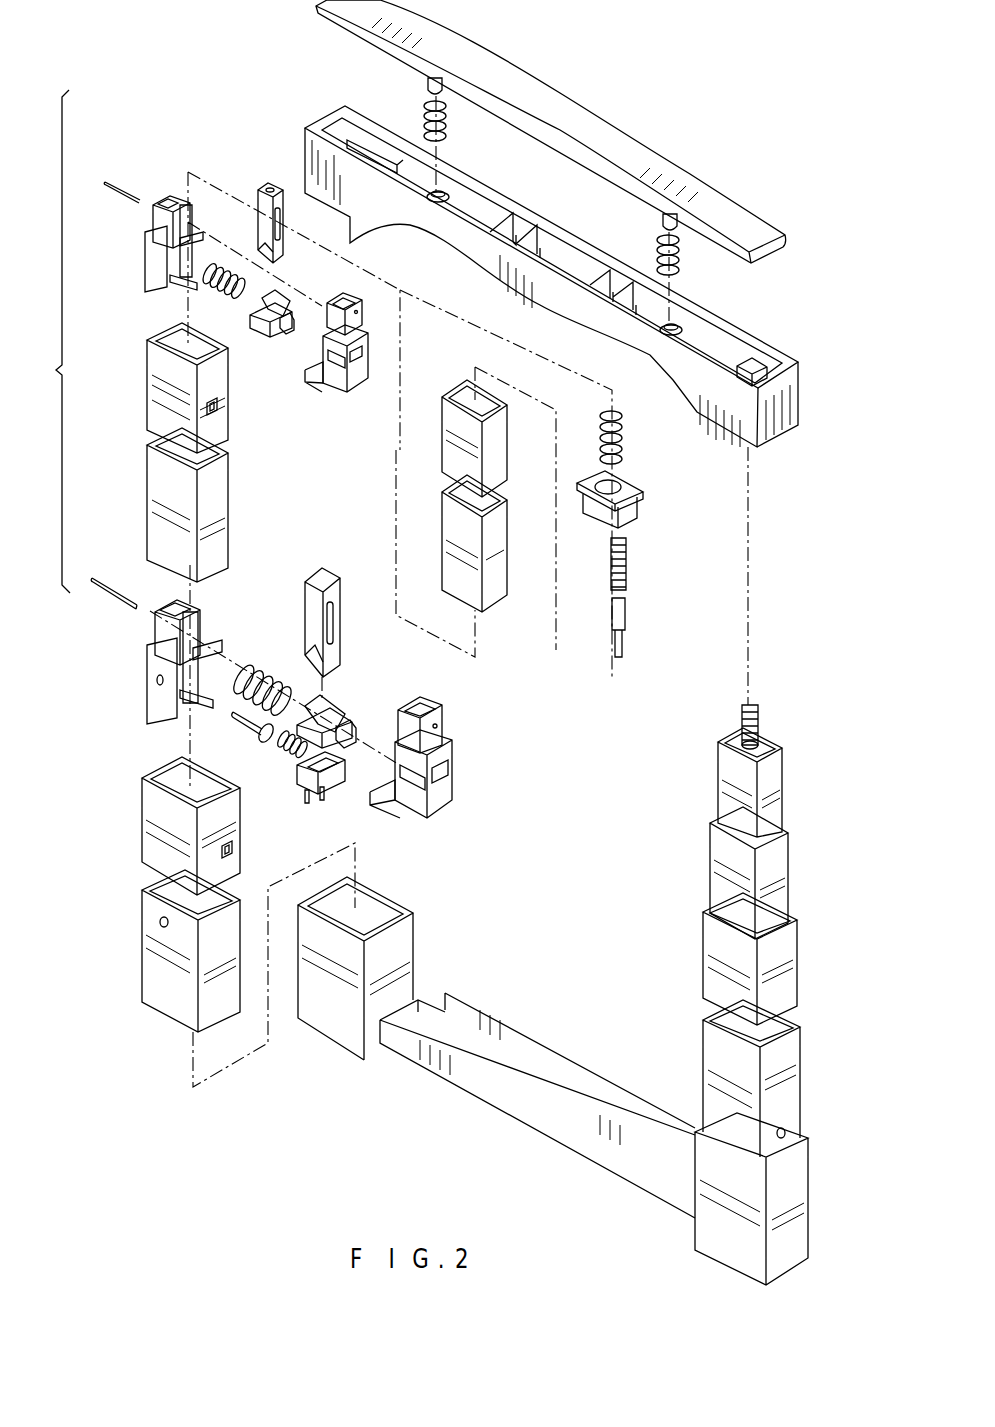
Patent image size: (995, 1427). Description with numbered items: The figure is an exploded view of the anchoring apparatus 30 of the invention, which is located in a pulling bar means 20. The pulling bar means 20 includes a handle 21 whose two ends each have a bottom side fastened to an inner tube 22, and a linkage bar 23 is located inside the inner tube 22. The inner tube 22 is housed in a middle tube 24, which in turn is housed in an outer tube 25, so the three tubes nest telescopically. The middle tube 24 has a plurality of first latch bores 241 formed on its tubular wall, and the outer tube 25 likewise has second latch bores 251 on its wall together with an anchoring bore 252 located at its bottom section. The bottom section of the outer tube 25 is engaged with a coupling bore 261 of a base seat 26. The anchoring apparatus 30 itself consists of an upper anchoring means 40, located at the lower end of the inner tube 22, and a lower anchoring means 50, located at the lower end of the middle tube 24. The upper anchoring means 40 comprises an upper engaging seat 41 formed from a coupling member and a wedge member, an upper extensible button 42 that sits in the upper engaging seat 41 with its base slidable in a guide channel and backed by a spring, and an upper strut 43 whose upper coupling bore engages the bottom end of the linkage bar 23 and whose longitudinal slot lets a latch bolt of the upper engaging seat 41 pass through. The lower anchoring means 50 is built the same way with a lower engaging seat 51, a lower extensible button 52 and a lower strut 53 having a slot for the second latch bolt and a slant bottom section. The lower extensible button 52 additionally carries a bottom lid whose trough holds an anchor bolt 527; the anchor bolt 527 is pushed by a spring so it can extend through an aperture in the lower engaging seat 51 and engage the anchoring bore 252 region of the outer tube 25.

The pulling bar means 20 is at (757, 130).
The handle 21 is at (290, 103).
The inner tube 22 is at (442, 447).
The linkage bar 23 is at (630, 613).
The middle tube 24 is at (147, 467).
The first latch bores 241 is at (217, 407).
The outer tube 25 is at (143, 826).
The second latch bores 251 is at (227, 852).
The anchoring bore 252 is at (163, 920).
The base seat 26 is at (493, 1058).
The coupling bore 261 is at (380, 912).
The anchoring apparatus 30 is at (49, 341).
The upper anchoring means 40 is at (141, 176).
The upper engaging seat 41 is at (335, 395).
The upper extensible button 42 is at (263, 337).
The upper strut 43 is at (248, 190).
The lower anchoring means 50 is at (120, 658).
The lower engaging seat 51 is at (452, 718).
The lower extensible button 52 is at (345, 707).
The lower strut 53 is at (302, 610).
The anchor bolt 527 is at (784, 1142).